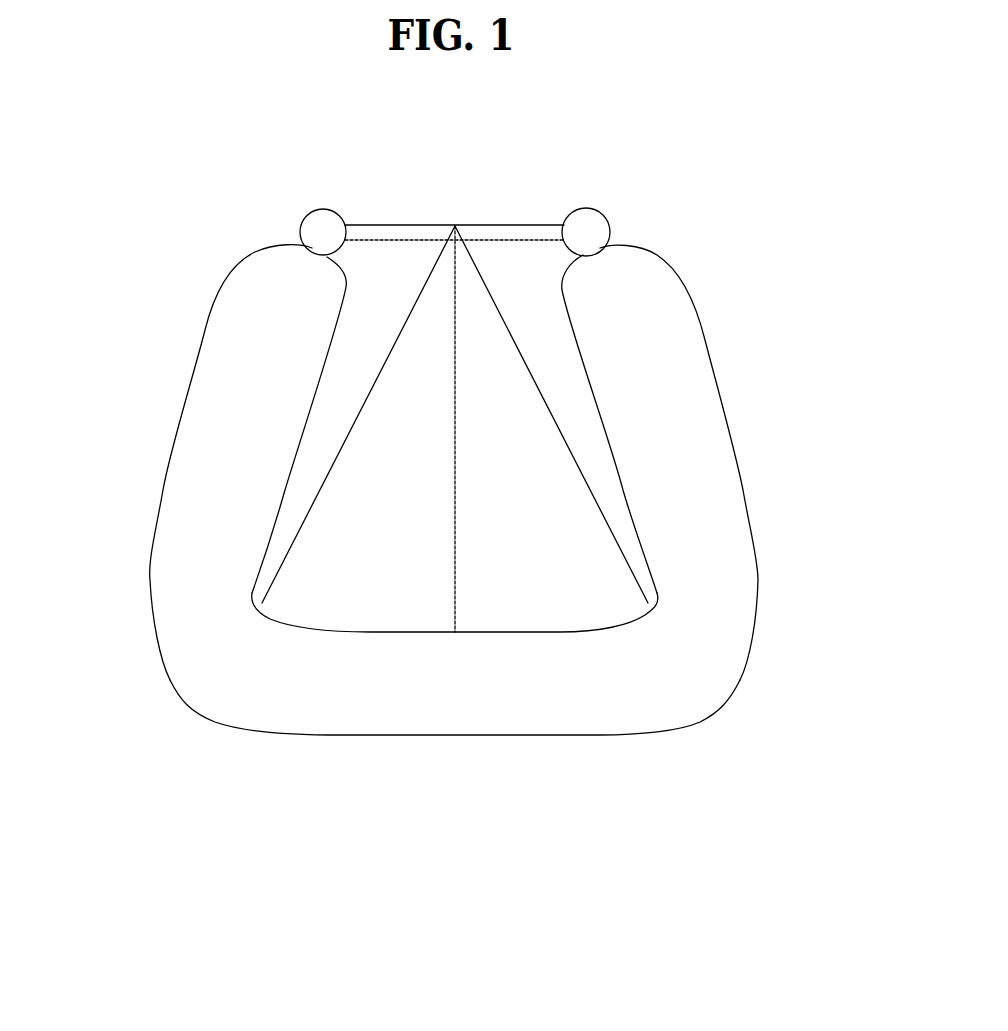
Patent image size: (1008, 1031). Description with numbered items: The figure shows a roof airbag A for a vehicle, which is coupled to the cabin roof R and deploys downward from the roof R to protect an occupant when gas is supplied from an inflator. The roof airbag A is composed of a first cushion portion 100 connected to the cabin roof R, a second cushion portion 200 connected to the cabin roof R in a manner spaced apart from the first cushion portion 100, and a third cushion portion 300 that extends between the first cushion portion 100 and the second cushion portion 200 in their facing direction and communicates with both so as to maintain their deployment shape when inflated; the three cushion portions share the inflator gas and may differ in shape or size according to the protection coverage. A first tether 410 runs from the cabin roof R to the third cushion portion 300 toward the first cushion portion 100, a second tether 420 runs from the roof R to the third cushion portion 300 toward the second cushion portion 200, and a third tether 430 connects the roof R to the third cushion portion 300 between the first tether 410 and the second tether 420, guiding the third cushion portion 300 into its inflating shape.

The first cushion portion 100 is at (232, 450).
The second cushion portion 200 is at (703, 482).
The third cushion portion 300 is at (418, 668).
The first tether 410 is at (390, 366).
The second tether 420 is at (547, 407).
The third tether 430 is at (458, 525).
The cabin roof R is at (512, 233).
The roof airbag A is at (703, 312).